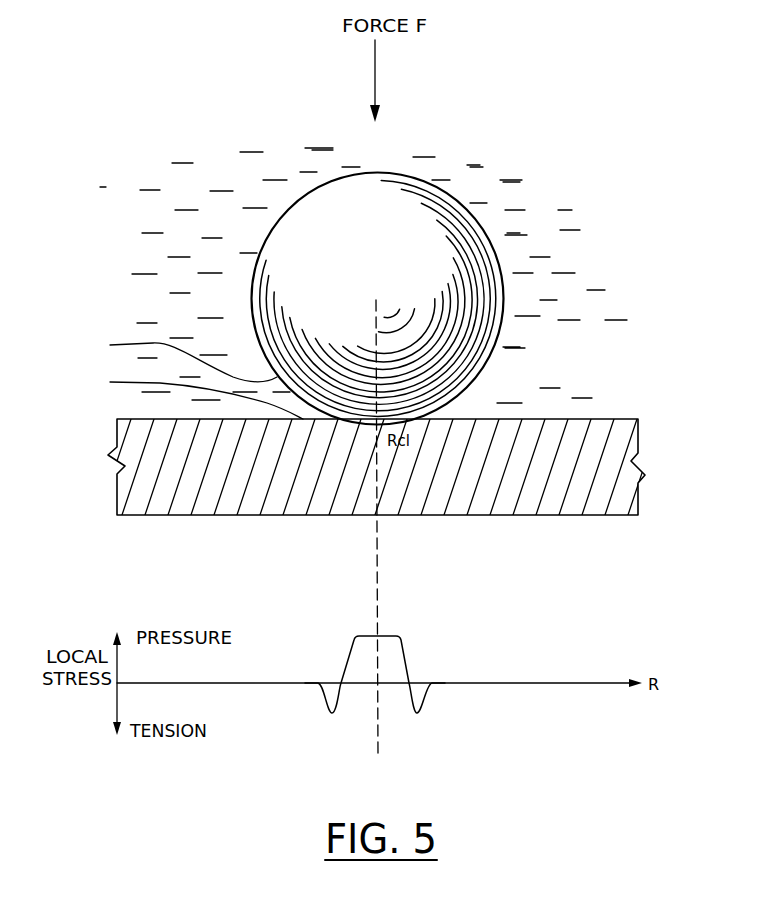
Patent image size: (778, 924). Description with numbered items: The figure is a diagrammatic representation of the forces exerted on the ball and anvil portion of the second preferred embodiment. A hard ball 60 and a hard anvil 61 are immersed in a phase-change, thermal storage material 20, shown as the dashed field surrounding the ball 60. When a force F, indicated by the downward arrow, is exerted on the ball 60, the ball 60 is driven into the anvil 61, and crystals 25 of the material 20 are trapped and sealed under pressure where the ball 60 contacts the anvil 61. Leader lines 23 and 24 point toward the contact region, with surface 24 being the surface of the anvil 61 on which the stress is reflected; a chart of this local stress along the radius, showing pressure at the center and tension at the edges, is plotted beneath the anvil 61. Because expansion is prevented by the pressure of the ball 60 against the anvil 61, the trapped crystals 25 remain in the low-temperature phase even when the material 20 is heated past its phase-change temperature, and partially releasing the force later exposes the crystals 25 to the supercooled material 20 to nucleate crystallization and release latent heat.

The phase-change thermal storage material 20 is at (263, 158).
The crystal layer 23 is at (178, 358).
The surface of anvil 24 is at (191, 396).
The trapped crystals 25 is at (594, 376).
The hard ball 60 is at (459, 200).
The hard anvil 61 is at (639, 436).